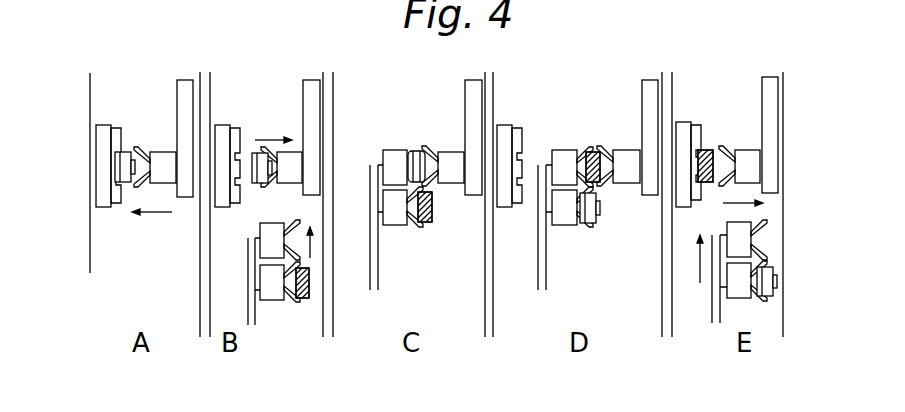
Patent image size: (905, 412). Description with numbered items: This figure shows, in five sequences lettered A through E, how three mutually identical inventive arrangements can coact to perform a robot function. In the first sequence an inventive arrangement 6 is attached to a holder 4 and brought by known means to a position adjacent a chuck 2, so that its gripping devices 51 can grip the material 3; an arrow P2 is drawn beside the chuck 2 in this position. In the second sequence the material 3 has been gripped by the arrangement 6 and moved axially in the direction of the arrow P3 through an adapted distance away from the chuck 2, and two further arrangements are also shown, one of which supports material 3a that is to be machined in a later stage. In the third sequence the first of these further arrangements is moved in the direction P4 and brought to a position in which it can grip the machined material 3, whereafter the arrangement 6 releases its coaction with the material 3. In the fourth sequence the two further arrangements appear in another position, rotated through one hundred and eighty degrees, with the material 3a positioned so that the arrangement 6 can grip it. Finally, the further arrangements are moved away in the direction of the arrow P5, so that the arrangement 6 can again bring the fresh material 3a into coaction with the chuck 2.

The chuck 2 is at (100, 125).
The material 3 is at (122, 182).
The material to be machined in a later stage 3a is at (299, 300).
The holder 4 is at (177, 94).
The inventive arrangement 6 is at (157, 152).
The gripping devices 51 is at (137, 148).
The movement step P2 is at (152, 229).
The arrow P3 is at (273, 137).
The direction P4 is at (310, 247).
The arrow P5 is at (698, 257).